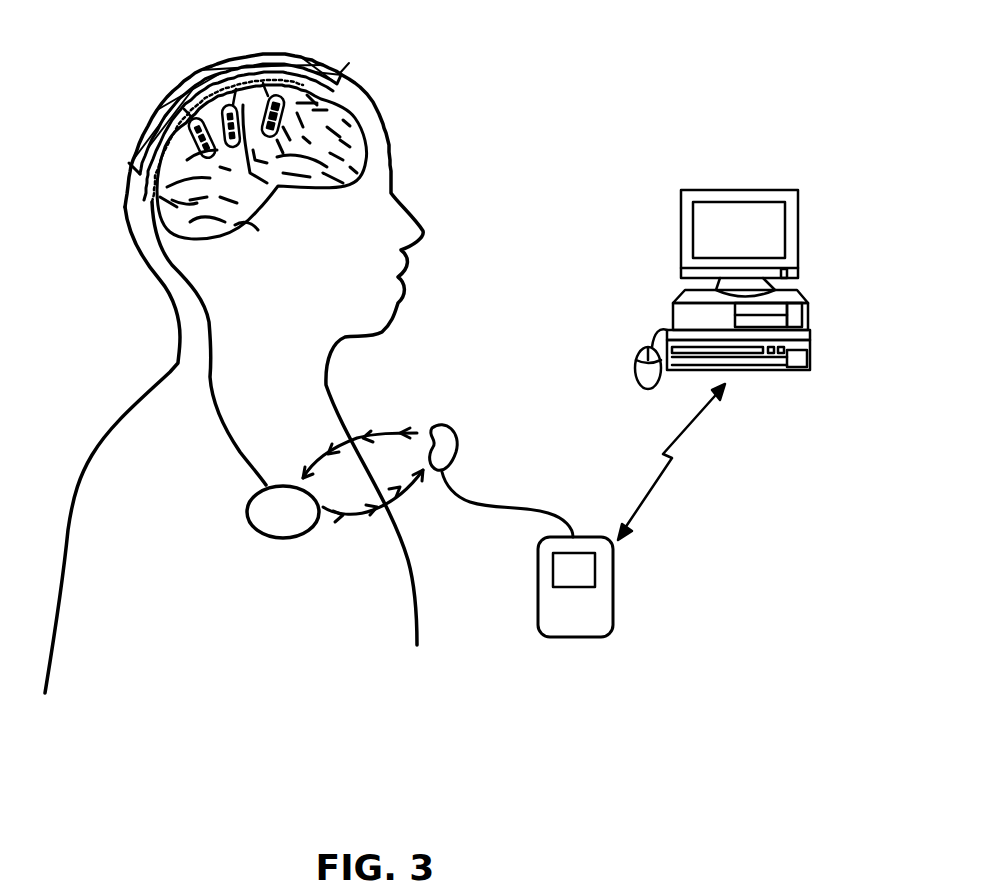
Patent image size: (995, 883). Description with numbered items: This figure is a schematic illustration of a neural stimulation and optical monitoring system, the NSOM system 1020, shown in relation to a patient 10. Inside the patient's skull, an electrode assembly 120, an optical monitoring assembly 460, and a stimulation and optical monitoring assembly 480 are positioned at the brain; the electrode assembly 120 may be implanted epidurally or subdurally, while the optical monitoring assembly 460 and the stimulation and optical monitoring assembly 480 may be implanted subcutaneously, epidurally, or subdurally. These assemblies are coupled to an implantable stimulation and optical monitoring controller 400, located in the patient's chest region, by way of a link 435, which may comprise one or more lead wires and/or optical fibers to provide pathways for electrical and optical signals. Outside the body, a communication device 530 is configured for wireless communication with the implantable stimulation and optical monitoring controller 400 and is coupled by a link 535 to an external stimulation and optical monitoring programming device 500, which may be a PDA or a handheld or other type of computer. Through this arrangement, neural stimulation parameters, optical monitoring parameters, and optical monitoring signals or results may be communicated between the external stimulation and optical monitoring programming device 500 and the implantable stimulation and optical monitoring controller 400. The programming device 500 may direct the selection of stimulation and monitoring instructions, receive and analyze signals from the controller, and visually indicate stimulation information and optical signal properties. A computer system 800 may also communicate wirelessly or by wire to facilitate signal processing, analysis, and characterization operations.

The patient 10 is at (425, 188).
The electrode assembly 120 is at (257, 77).
The optical monitoring assembly 460 is at (195, 88).
The stimulation and optical monitoring assembly 480 is at (162, 113).
The link 435 is at (210, 355).
The implantable stimulation and optical monitoring controller 400 is at (283, 512).
The communication device 530 is at (458, 452).
The link 535 is at (510, 507).
The external stimulation and optical monitoring programming device 500 is at (613, 573).
The computer system 800 is at (825, 197).
The NSOM system 1020 is at (507, 713).